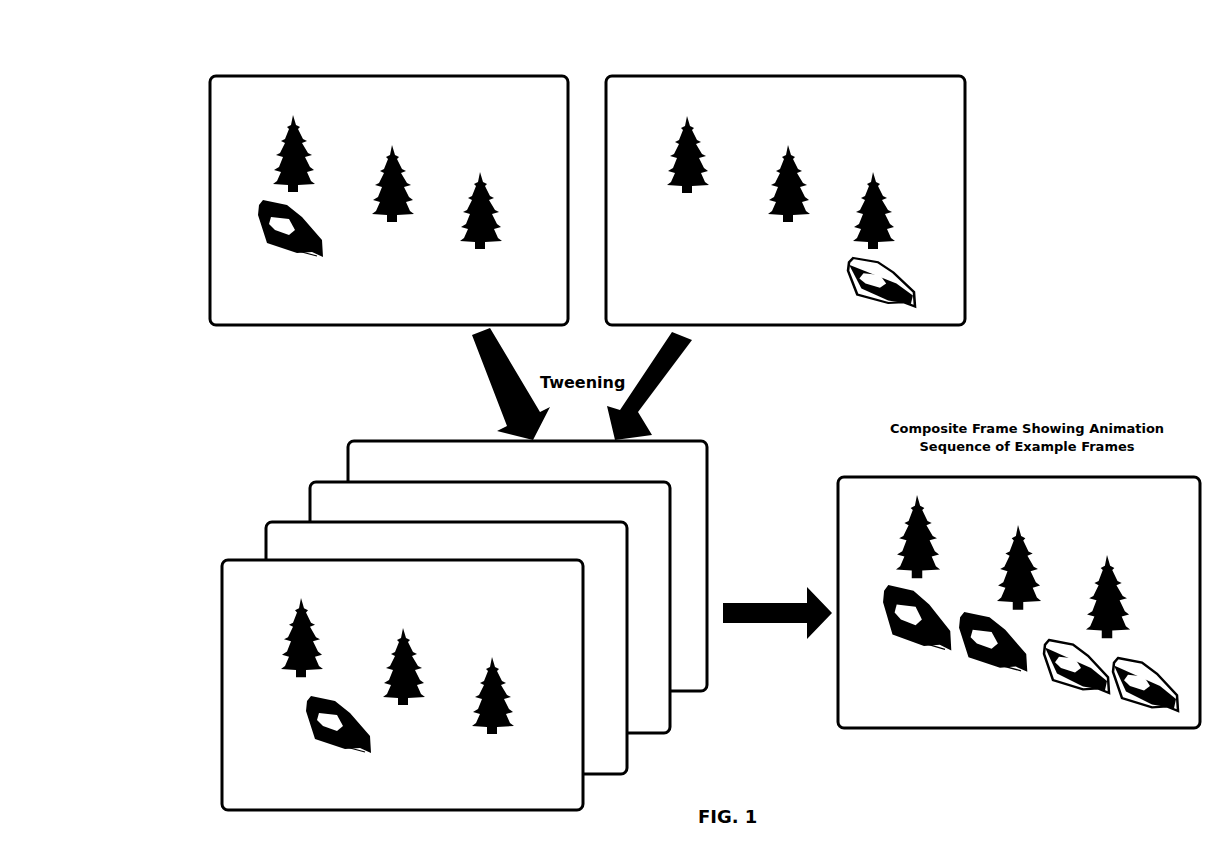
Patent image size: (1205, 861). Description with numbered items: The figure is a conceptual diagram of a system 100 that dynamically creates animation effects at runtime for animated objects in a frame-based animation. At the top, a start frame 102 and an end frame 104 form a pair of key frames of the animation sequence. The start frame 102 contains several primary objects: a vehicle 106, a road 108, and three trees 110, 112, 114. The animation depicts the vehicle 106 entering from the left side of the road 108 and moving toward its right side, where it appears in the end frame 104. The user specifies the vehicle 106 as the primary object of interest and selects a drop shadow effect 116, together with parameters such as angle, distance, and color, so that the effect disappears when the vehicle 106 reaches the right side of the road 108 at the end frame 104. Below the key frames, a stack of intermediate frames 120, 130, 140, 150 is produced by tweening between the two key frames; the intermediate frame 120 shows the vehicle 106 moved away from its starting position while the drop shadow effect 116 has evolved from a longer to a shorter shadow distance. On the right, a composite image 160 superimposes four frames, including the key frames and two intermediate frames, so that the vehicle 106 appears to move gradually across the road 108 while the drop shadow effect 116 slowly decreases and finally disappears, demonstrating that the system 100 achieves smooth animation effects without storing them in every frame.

The system 100 is at (340, 46).
The start frame 102 is at (210, 100).
The end frame 104 is at (606, 82).
The vehicle 106 is at (275, 249).
The road 108 is at (372, 268).
The tree 110 is at (280, 128).
The tree 112 is at (388, 143).
The tree 114 is at (480, 171).
The drop shadow effect 116 is at (292, 212).
The intermediate frame 120 is at (222, 610).
The intermediate frame 130 is at (266, 530).
The intermediate frame 140 is at (310, 502).
The intermediate frame 150 is at (348, 462).
The composite image 160 is at (838, 492).